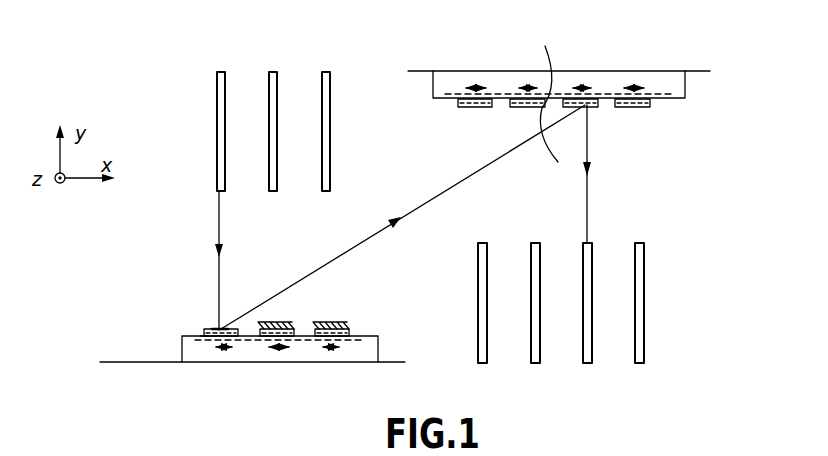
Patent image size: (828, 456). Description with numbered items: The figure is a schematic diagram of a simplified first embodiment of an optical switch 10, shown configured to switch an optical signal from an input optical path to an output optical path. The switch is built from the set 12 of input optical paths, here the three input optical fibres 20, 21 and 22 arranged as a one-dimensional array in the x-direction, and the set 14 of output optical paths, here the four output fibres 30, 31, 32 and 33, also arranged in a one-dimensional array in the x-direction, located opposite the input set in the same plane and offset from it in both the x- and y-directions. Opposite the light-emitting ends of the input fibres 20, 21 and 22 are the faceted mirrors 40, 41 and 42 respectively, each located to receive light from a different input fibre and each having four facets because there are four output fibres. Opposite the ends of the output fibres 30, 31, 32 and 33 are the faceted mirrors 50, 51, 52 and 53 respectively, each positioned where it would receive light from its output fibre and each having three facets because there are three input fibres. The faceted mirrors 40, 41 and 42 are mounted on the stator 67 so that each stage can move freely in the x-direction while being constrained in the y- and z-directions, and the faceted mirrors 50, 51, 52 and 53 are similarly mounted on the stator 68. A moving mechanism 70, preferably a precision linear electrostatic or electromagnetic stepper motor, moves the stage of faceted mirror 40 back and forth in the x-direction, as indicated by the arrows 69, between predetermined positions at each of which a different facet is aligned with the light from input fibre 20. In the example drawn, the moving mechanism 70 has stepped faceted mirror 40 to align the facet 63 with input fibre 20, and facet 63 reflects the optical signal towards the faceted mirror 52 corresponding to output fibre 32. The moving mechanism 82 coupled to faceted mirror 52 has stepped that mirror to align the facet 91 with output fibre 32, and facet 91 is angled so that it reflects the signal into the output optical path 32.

The optical switch 10 is at (437, 256).
The set of input optical paths 12 is at (213, 55).
The set of output optical paths 14 is at (475, 378).
The input optical fibre 20 is at (225, 125).
The input optical fibre 21 is at (277, 125).
The input optical fibre 22 is at (330, 125).
The output optical fibre 30 is at (487, 308).
The output optical fibre 31 is at (540, 308).
The output optical fibre 32 is at (592, 308).
The output optical fibre 33 is at (644, 308).
The faceted mirror 40 is at (207, 331).
The faceted mirror 41 is at (283, 330).
The faceted mirror 42 is at (347, 332).
The faceted mirror 50 is at (462, 107).
The faceted mirror 51 is at (515, 108).
The faceted mirror 52 is at (603, 107).
The faceted mirror 53 is at (647, 105).
The mirror facet 63 is at (215, 330).
The stator 67 is at (182, 347).
The stator 68 is at (687, 95).
The arrows 69 is at (223, 348).
The moving mechanism 70 is at (203, 337).
The moving mechanism 82 is at (545, 91).
The mirror facet 91 is at (609, 174).